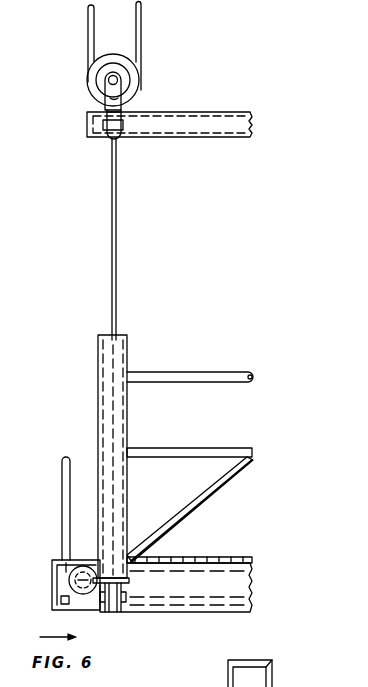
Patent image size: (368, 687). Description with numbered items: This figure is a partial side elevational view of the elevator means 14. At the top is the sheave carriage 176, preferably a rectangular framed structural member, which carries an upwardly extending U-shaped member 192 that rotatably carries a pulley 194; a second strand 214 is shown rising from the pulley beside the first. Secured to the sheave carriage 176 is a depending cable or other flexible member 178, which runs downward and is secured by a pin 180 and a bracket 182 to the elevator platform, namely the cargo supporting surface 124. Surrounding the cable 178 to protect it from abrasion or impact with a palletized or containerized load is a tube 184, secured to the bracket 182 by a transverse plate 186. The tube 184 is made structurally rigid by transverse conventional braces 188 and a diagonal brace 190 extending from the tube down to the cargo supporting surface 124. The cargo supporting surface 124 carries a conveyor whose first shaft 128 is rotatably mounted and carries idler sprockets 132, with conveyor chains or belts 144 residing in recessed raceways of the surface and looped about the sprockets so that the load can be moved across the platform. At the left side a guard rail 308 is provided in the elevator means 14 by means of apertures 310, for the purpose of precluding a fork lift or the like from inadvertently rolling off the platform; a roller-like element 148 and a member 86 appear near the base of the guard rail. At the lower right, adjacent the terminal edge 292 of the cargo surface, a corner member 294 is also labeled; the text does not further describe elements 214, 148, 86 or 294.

The elevator means 14 is at (70, 76).
The pulleys 194 is at (119, 59).
The right rope strand 214 is at (143, 33).
The U-shaped members 192 is at (118, 100).
The sheave carriage 176 is at (195, 125).
The cables 178 is at (117, 193).
The tubes 184 is at (127, 340).
The transverse braces 188 is at (210, 453).
The diagonal braces 190 is at (197, 493).
The guard rail 308 is at (72, 460).
The apertures 310 is at (71, 562).
The first shaft 128 is at (57, 582).
The roller 148 is at (57, 568).
The idler sprockets 132 is at (61, 601).
The transverse plate 186 is at (129, 586).
The brackets 182 is at (116, 608).
The pins 180 is at (107, 600).
The cargo supporting surface 124 is at (183, 556).
The conveyor chains or belts 144 is at (210, 558).
The frame member 86 is at (5, 535).
The terminal edge 292 is at (228, 680).
The box flange 294 is at (262, 660).